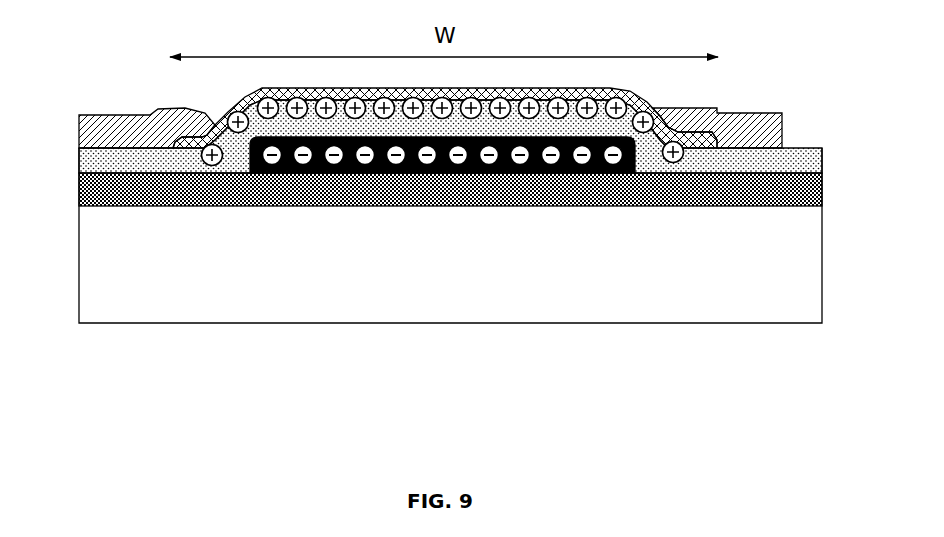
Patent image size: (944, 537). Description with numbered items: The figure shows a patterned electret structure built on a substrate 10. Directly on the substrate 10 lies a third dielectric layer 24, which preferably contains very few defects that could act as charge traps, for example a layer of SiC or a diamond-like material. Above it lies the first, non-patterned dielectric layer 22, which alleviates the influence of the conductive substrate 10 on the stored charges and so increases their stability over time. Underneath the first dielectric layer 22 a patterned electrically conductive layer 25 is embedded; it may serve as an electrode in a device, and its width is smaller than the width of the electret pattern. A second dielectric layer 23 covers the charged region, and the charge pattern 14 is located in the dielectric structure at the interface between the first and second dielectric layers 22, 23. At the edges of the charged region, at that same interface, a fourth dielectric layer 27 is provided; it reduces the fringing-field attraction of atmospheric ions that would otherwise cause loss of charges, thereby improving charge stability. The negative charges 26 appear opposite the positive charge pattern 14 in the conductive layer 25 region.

The substrate 10 is at (450, 235).
The charge pattern 14 is at (230, 115).
The first dielectric layer 22 is at (753, 163).
The second dielectric layer 23 is at (640, 98).
The third dielectric layer 24 is at (257, 191).
The patterned electrically conductive layer 25 is at (568, 176).
The negative charges 26 is at (336, 158).
The fourth dielectric layer 27 is at (103, 132).